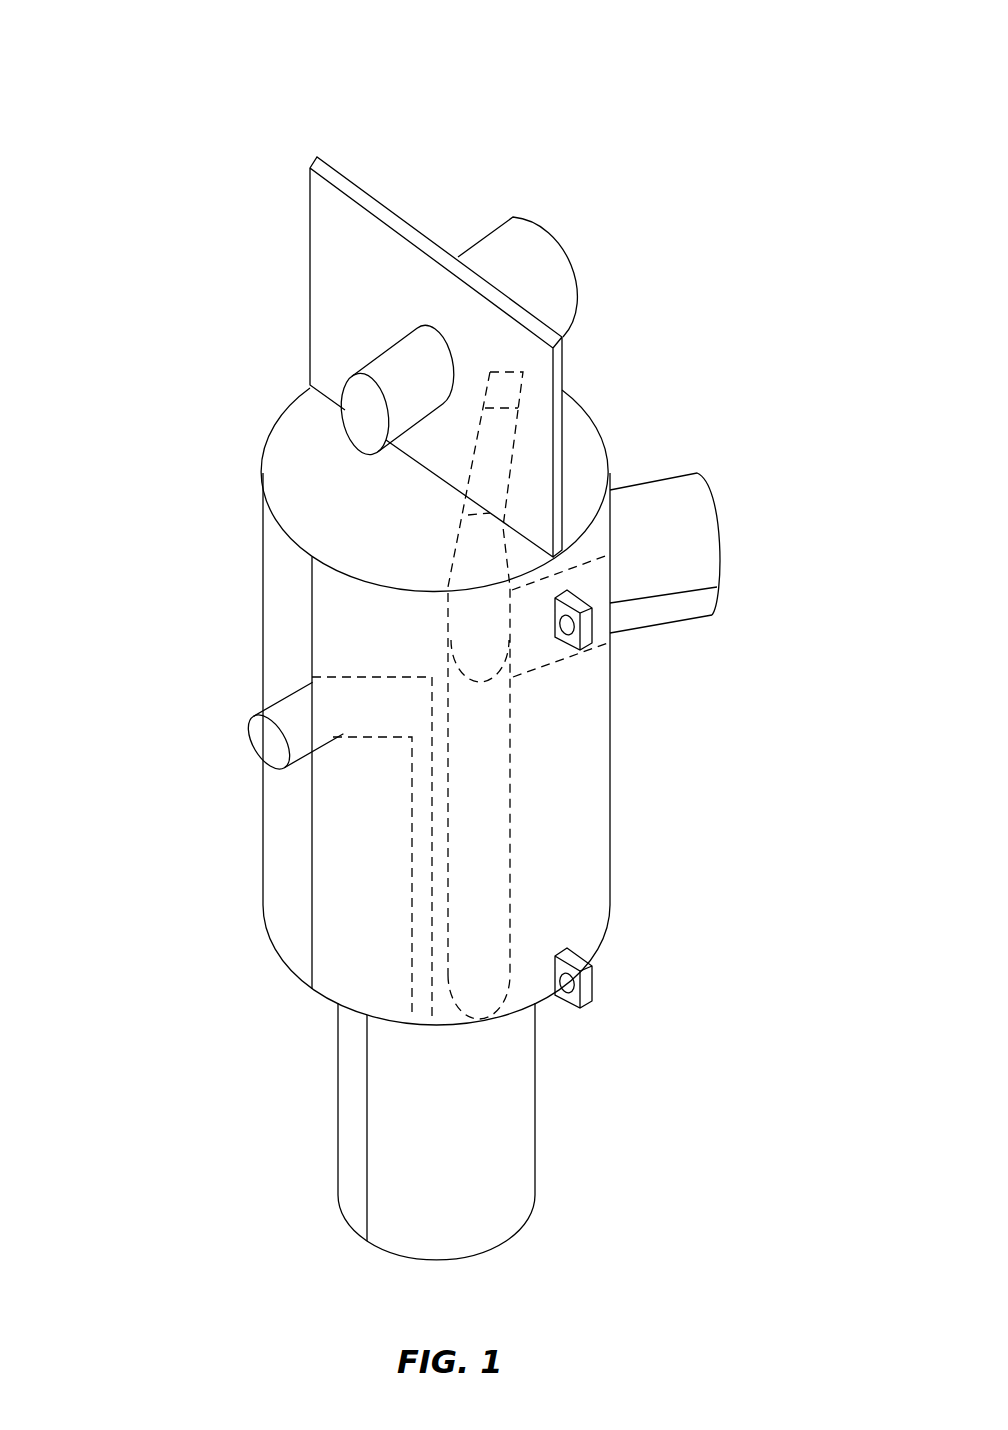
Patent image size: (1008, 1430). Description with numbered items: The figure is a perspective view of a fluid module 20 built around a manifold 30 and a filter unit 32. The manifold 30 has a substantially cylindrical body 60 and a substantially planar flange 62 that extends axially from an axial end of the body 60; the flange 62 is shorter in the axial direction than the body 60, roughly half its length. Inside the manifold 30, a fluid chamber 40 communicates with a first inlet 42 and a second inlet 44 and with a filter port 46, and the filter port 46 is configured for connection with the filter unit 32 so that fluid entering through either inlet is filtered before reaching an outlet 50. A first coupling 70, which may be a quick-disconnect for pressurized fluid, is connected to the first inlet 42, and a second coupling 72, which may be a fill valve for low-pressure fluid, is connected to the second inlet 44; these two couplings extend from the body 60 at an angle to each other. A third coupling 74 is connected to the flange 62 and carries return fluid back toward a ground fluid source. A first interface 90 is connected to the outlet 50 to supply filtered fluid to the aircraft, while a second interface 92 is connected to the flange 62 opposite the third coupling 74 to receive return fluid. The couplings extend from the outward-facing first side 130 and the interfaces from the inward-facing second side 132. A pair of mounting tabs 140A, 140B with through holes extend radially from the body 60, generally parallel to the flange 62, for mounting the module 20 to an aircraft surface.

The fluid module 20 is at (381, 100).
The manifold 30 is at (180, 810).
The filter unit 32 is at (337, 1157).
The fluid chamber 40 is at (512, 811).
The first inlet 42 is at (618, 638).
The second inlet 44 is at (532, 408).
The filter port 46 is at (330, 1013).
The outlet 50 is at (303, 677).
The body 60 is at (263, 532).
The flange 62 is at (320, 257).
The first coupling 70 is at (722, 540).
The second coupling 72 is at (532, 382).
The third coupling 74 is at (585, 293).
The first interface 90 is at (250, 742).
The second interface 92 is at (357, 372).
The first side 130 is at (632, 845).
The second side 132 is at (228, 417).
The mounting tab 140A is at (585, 658).
The mounting tab 140B is at (603, 993).